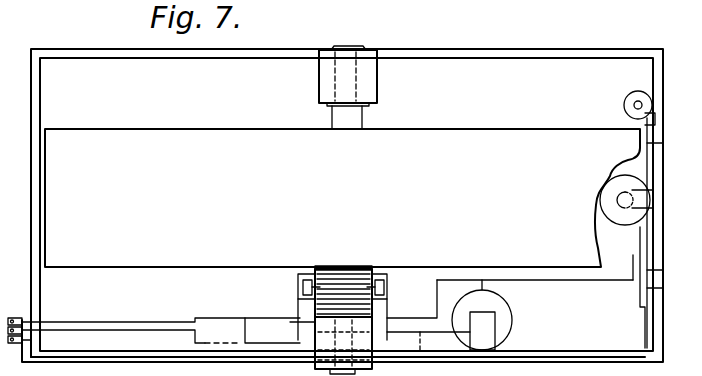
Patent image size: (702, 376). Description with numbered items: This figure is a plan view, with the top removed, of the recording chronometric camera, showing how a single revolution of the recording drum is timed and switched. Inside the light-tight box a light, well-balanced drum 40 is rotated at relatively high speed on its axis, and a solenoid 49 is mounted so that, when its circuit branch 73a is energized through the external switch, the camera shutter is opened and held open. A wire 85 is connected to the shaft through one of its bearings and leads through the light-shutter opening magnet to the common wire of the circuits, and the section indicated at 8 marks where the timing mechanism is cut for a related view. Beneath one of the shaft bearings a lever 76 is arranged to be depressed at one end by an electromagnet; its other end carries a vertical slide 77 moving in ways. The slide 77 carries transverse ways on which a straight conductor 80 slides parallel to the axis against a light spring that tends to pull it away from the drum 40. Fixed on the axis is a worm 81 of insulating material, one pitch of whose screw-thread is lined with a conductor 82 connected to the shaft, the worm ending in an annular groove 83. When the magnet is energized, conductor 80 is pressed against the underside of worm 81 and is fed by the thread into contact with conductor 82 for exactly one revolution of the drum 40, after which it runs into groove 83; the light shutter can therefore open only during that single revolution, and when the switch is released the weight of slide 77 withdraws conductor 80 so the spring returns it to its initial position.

The drum 40 is at (134, 132).
The solenoid 49 is at (600, 208).
The circuit branch 73a is at (648, 330).
The conductor 85 is at (104, 305).
The section line 8 is at (167, 322).
The worm 81 is at (300, 300).
The annular groove 83 is at (316, 268).
The straight conductor 80 is at (390, 292).
The conductor 82 is at (365, 268).
The vertical slide 77 is at (298, 340).
The lever 76 is at (492, 338).